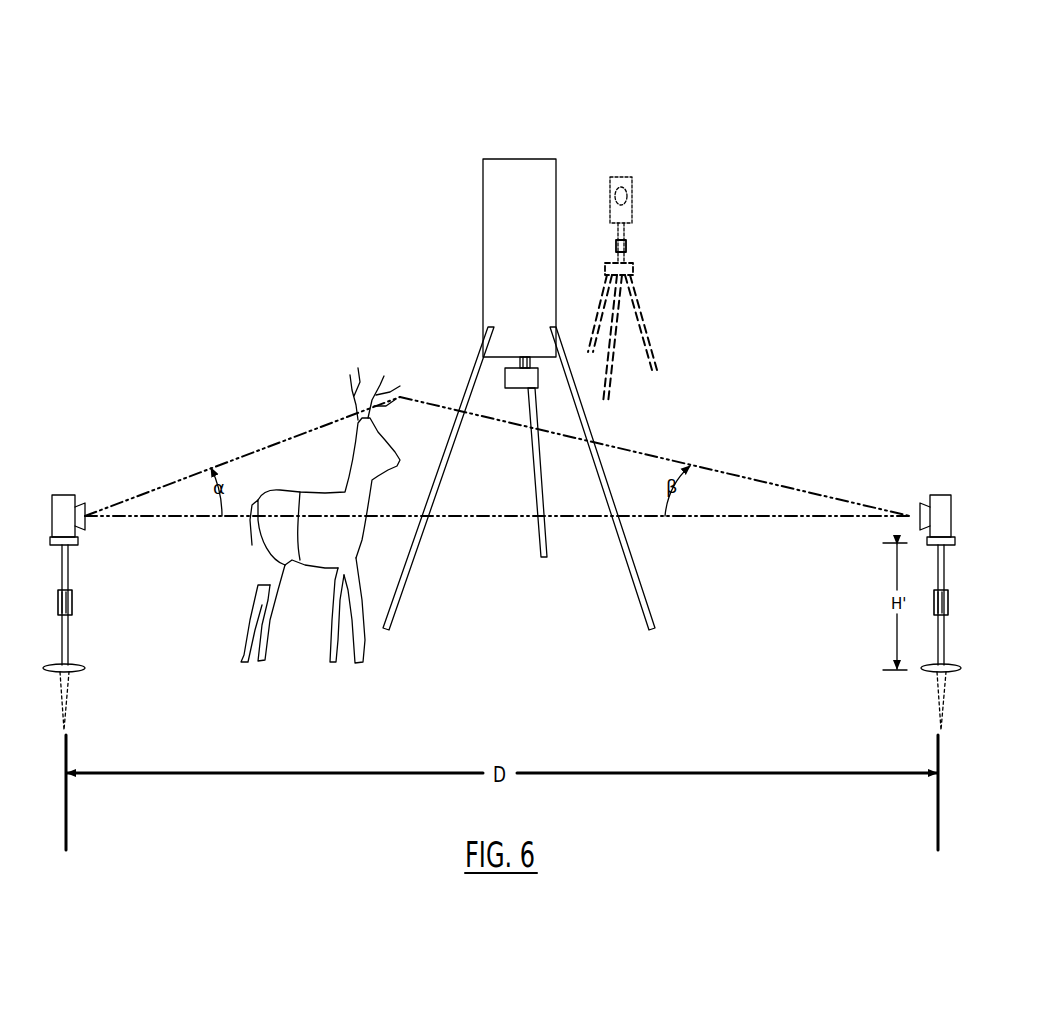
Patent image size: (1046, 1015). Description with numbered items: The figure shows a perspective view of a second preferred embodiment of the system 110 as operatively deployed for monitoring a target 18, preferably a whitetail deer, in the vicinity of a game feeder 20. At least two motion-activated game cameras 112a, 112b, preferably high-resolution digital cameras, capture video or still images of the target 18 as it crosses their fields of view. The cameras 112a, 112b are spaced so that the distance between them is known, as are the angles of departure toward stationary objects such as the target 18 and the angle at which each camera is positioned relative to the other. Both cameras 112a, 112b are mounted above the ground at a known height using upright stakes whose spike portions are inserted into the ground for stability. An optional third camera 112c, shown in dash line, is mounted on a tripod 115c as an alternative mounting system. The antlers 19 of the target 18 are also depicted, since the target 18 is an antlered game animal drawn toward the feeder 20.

The system 110 is at (262, 113).
The motion-activated game camera 112a is at (64, 495).
The motion-activated game camera 112b is at (940, 495).
The third camera 112c is at (617, 177).
The tripod 115c is at (633, 268).
The target 18 is at (315, 507).
The antlers 19 is at (373, 375).
The game feeder 20 is at (530, 306).